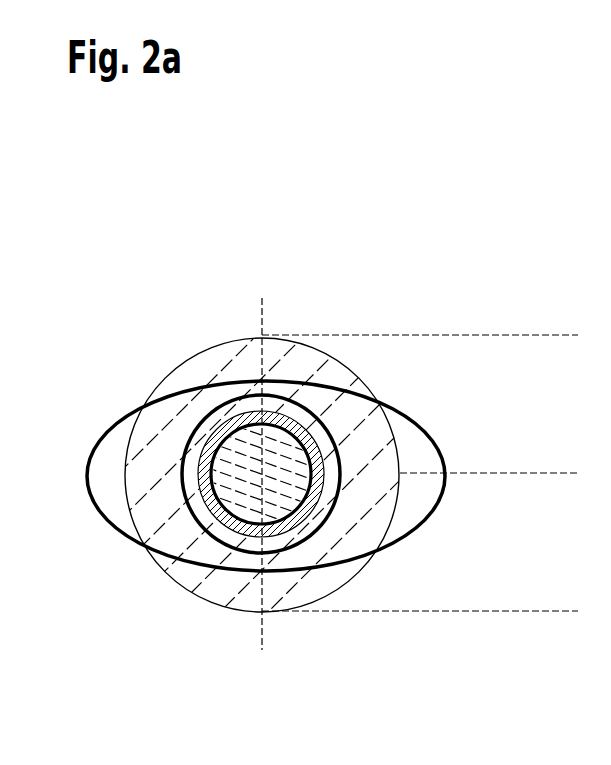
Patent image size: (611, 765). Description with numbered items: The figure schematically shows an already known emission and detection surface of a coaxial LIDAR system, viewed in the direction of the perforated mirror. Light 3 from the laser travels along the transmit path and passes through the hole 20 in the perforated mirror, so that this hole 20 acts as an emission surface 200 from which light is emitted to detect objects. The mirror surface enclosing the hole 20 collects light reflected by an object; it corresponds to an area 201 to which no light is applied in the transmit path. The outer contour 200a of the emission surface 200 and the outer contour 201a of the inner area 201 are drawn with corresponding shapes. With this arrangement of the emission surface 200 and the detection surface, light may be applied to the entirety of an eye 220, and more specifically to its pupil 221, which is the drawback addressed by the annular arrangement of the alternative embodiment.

The light 3 is at (320, 470).
The hole 20 is at (190, 496).
The emission surface 200 is at (272, 528).
The outer contour of emission surface 200a is at (195, 522).
The area 201 is at (228, 366).
The outer contour of inner area 201a is at (237, 605).
The eye 220 is at (405, 415).
The pupil 221 is at (273, 450).